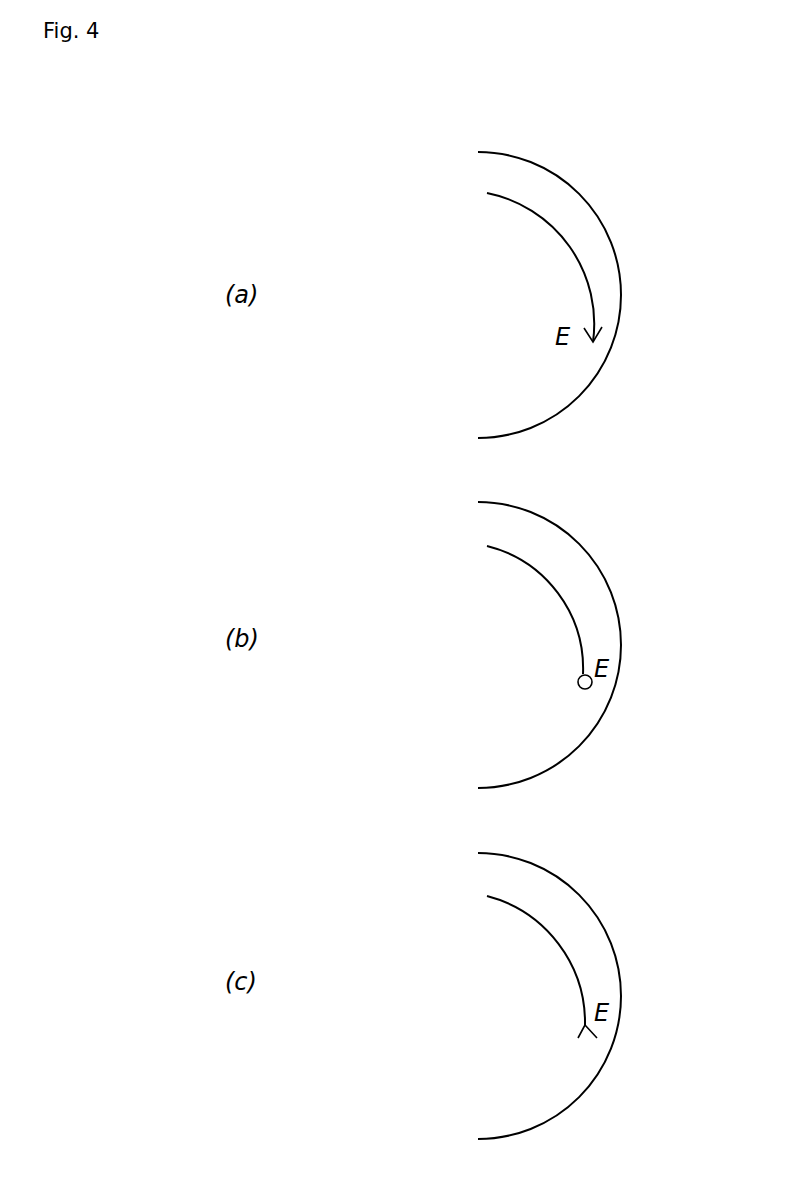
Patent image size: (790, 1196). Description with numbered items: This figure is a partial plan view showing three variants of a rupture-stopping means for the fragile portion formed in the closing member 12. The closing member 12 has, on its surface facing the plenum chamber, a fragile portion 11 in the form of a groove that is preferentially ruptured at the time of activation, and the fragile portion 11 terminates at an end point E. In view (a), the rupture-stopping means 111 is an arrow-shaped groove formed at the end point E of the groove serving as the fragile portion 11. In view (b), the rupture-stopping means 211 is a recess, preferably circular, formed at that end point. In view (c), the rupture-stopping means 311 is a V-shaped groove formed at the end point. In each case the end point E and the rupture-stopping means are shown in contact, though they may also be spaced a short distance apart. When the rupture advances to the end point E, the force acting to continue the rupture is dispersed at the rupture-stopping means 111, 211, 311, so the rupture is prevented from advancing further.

The closing member 12 is at (524, 172).
The fragile portion 11 is at (553, 230).
The rupture-stopping means 111 is at (601, 338).
The rupture-stopping means 211 is at (592, 687).
The rupture-stopping means 311 is at (597, 1035).